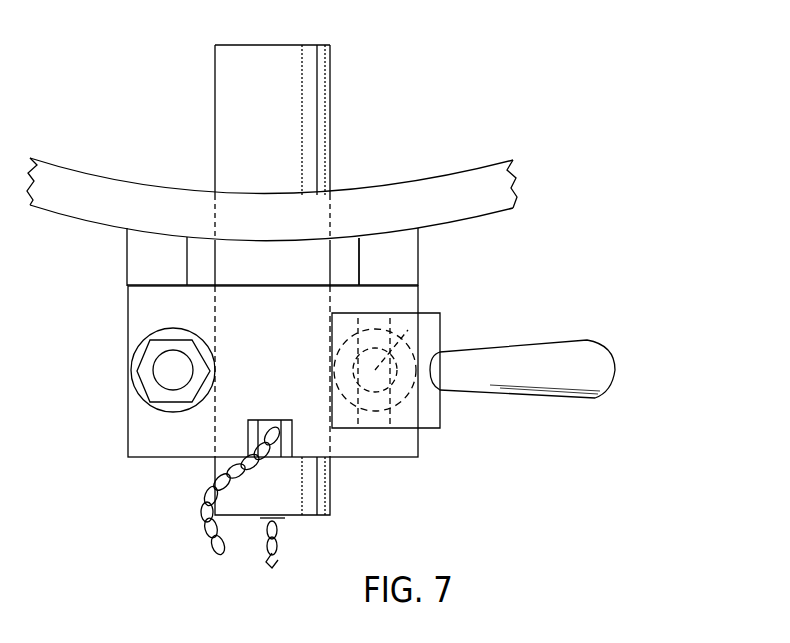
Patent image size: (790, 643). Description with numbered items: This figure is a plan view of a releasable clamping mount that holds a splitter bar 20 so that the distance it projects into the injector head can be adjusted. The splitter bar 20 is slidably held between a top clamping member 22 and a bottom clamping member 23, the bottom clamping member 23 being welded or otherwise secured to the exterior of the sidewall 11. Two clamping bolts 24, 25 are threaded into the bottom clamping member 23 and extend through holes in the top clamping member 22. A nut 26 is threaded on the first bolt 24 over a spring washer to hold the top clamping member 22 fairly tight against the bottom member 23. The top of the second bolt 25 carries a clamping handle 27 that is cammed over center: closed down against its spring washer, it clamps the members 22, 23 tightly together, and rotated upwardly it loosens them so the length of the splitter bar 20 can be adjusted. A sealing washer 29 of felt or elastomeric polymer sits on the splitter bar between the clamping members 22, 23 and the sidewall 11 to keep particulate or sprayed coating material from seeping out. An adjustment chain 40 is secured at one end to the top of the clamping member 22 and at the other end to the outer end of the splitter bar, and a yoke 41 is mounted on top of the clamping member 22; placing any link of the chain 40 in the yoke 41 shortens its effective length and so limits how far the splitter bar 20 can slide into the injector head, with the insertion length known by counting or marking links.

The sidewall 11 is at (420, 190).
The splitter bar 20 is at (215, 85).
The top clamping member 22 is at (285, 382).
The bottom clamping member 23 is at (147, 270).
The clamping bolt 24 is at (158, 356).
The clamping bolt 25 is at (425, 322).
The nut 26 is at (150, 391).
The clamping handle 27 is at (565, 350).
The sealing washer 29 is at (345, 254).
The adjustment chain 40 is at (205, 522).
The yoke 41 is at (248, 434).